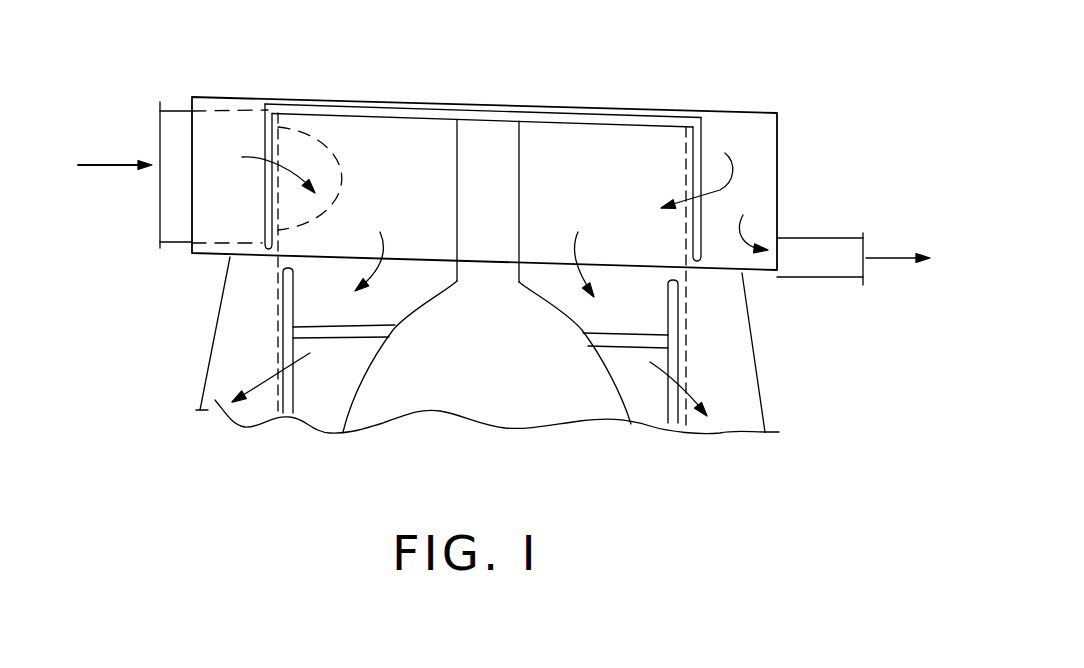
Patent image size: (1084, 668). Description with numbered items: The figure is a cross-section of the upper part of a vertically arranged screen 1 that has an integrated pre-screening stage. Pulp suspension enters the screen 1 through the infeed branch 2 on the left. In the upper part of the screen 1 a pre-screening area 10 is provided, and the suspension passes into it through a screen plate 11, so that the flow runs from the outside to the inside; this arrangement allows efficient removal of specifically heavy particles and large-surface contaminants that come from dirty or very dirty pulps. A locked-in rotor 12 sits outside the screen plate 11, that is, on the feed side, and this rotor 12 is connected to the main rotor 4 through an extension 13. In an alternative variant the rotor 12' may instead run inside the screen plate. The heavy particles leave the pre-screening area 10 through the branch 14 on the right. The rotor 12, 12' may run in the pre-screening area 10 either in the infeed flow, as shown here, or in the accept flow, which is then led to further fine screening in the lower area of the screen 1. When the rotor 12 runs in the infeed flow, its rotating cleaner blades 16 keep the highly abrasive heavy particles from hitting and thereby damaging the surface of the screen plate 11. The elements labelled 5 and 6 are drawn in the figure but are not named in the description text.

The screen 1 is at (788, 90).
The infeed branch 2 is at (165, 216).
The rotor 4 is at (428, 402).
The guide shelf 5 is at (278, 306).
The side wall 6 is at (217, 400).
The pre-screening area 10 is at (397, 138).
The screen plate 11 is at (688, 142).
The rotor 12 is at (282, 225).
The rotor 12' is at (294, 376).
The extension 13 is at (505, 150).
The branch 14 is at (870, 259).
The cleaner blades 16 is at (696, 152).